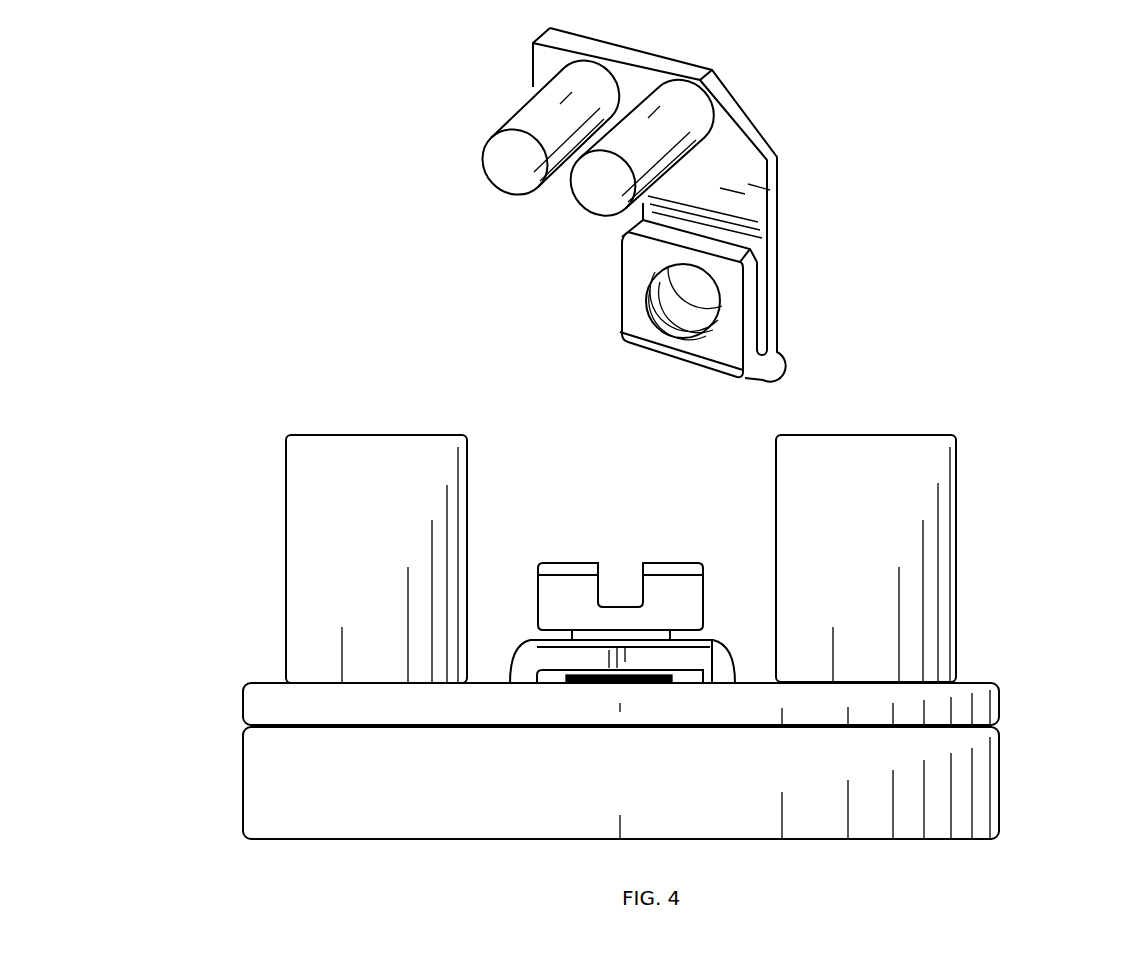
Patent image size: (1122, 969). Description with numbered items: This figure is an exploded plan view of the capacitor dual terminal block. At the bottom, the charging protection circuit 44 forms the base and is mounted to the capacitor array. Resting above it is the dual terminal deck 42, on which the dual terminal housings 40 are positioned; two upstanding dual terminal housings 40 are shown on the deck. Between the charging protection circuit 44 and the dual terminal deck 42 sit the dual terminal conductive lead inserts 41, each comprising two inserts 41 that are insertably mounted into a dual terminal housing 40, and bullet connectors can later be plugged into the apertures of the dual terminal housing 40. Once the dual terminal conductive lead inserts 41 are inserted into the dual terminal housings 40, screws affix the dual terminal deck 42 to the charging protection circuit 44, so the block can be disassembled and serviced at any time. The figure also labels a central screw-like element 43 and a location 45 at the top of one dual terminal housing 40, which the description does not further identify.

The dual terminal housing 40 is at (360, 508).
The dual terminal conductive lead insert 41 is at (543, 127).
The dual terminal deck 42 is at (362, 715).
The clamping screw 43 is at (567, 602).
The charging protection circuit 44 is at (315, 798).
The top surface of support block 45 is at (887, 433).